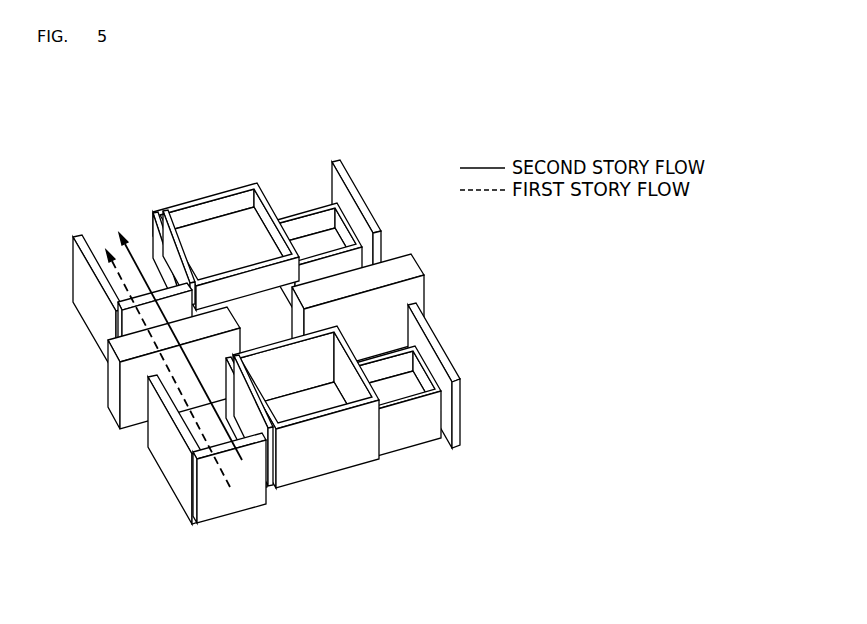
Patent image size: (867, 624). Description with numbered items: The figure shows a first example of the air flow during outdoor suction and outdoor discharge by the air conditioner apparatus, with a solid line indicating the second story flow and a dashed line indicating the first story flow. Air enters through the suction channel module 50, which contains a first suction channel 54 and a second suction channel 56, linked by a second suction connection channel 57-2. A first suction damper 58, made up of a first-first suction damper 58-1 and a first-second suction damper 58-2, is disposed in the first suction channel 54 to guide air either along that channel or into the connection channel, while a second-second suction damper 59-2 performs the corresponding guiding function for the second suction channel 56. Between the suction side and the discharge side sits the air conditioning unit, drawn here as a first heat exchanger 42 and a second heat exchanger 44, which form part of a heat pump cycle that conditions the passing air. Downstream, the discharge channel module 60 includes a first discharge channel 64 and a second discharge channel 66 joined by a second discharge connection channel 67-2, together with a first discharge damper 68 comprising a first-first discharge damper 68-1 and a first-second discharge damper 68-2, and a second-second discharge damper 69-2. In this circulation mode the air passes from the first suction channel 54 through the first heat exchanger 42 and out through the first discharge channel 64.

The first heat exchanger 42 is at (148, 352).
The second heat exchanger 44 is at (401, 268).
The suction channel module 50 is at (320, 447).
The first suction channel 54 is at (214, 487).
The second suction channel 56 is at (422, 420).
The second suction connection channel 57-2 is at (324, 390).
The first suction damper 58 is at (276, 467).
The 1-1 suction damper 58-1 is at (265, 462).
The 1-2 suction damper 58-2 is at (268, 432).
The 2-2 suction damper 59-2 is at (352, 380).
The discharge channel module 60 is at (236, 248).
The first discharge channel 64 is at (103, 237).
The second discharge channel 66 is at (315, 178).
The second discharge connection channel 67-2 is at (228, 243).
The first discharge damper 68 is at (162, 221).
The 1-1 discharge damper 68-1 is at (168, 232).
The 1-2 discharge damper 68-2 is at (183, 250).
The 2-2 discharge damper 69-2 is at (265, 192).